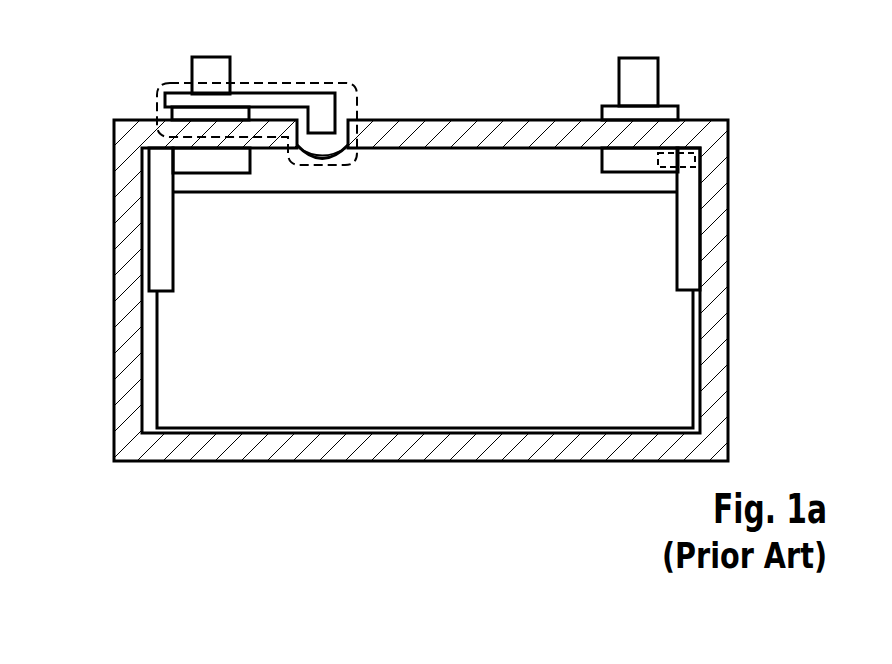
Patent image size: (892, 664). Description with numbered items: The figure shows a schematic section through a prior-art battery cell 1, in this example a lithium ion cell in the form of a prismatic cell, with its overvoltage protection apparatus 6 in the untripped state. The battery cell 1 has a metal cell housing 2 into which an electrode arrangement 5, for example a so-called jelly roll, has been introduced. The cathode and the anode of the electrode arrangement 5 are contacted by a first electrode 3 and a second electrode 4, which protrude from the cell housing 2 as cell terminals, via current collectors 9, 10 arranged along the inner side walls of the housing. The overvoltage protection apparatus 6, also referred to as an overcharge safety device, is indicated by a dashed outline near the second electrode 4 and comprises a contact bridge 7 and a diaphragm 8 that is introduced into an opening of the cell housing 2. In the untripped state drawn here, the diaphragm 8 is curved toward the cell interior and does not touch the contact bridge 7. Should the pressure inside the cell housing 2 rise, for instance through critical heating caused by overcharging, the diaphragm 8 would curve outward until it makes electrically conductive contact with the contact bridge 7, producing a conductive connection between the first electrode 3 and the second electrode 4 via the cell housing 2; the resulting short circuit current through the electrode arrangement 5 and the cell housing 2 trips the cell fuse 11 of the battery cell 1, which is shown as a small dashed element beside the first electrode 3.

The battery cell 1 is at (98, 76).
The cell housing 2 is at (716, 204).
The first electrode 3 is at (658, 63).
The second electrode 4 is at (192, 70).
The electrode arrangement 5 is at (259, 410).
The overvoltage protection apparatus 6 is at (253, 83).
The contact bridge 7 is at (288, 93).
The diaphragm 8 is at (320, 160).
The current collector 9 is at (688, 262).
The current collector 10 is at (162, 260).
The cell fuse 11 is at (696, 159).